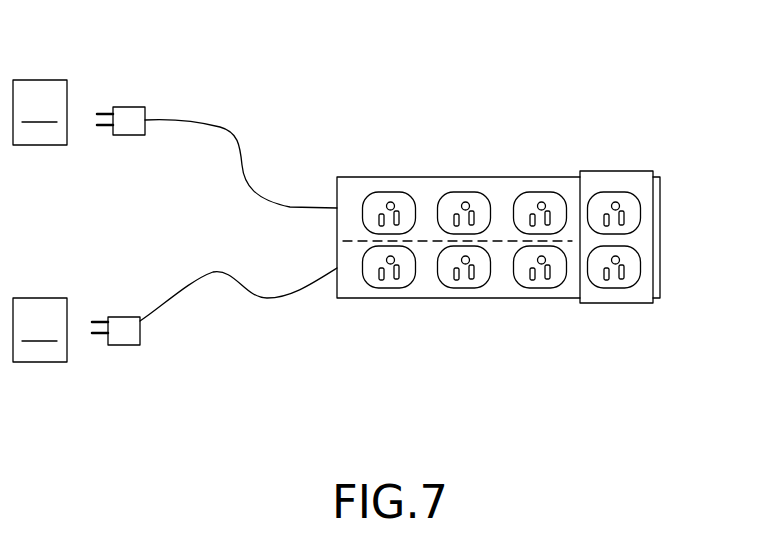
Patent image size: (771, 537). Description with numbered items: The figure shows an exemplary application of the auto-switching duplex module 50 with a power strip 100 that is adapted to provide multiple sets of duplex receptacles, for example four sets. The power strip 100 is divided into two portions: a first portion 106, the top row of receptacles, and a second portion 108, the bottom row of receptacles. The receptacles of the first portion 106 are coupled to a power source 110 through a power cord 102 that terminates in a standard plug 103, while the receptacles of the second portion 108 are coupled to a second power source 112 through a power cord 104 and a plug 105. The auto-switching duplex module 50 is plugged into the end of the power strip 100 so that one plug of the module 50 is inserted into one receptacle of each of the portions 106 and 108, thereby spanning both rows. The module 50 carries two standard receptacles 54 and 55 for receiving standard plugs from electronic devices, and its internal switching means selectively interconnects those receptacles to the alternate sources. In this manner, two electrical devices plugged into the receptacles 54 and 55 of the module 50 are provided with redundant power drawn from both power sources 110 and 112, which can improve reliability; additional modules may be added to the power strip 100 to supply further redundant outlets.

The power strip 100 is at (534, 215).
The auto-switching duplex module 50 is at (655, 201).
The receptacle 54 is at (640, 265).
The receptacle 55 is at (638, 203).
The first portion 106 is at (392, 177).
The second portion 108 is at (403, 298).
The power cord 102 is at (220, 127).
The standard plug 103 is at (127, 107).
The power cord 104 is at (238, 287).
The plug 105 is at (120, 345).
The power source 110 is at (40, 112).
The second power source 112 is at (40, 330).